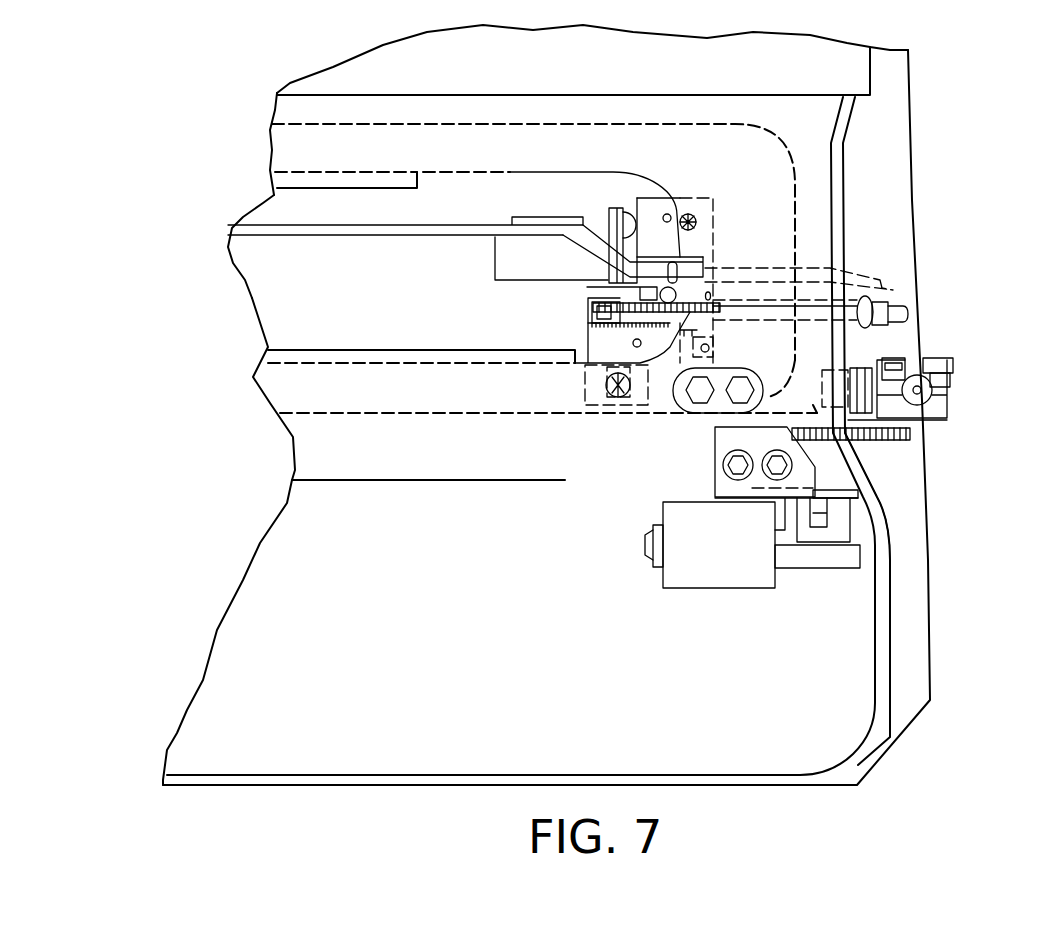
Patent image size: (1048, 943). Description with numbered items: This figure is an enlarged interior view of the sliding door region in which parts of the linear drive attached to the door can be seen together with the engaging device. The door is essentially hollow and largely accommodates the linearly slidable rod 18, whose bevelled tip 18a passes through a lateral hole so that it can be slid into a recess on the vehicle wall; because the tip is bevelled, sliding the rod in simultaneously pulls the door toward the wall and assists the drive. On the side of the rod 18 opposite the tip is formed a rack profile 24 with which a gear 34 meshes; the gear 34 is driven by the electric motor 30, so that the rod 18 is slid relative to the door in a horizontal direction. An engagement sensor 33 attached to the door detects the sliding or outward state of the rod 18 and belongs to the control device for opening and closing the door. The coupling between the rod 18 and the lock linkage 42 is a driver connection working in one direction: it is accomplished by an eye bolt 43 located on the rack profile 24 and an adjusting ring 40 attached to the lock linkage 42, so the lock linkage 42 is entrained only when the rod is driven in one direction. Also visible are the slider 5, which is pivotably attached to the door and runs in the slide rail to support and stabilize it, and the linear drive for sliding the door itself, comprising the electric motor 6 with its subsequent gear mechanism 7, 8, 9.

The slider 5 is at (927, 363).
The electric motor 6 is at (720, 606).
The gear mechanism 7 is at (797, 430).
The gear mechanism 8 is at (888, 440).
The gear mechanism 9 is at (897, 440).
The rod 18 is at (773, 310).
The tip 18a is at (897, 308).
The rack profile 24 is at (590, 295).
The electric motor 30 is at (525, 245).
The engagement sensor 33 is at (682, 368).
The gear 34 is at (665, 290).
The adjusting ring 40 is at (708, 257).
The lock linkage 42 is at (283, 230).
The eye bolt 43 is at (643, 363).